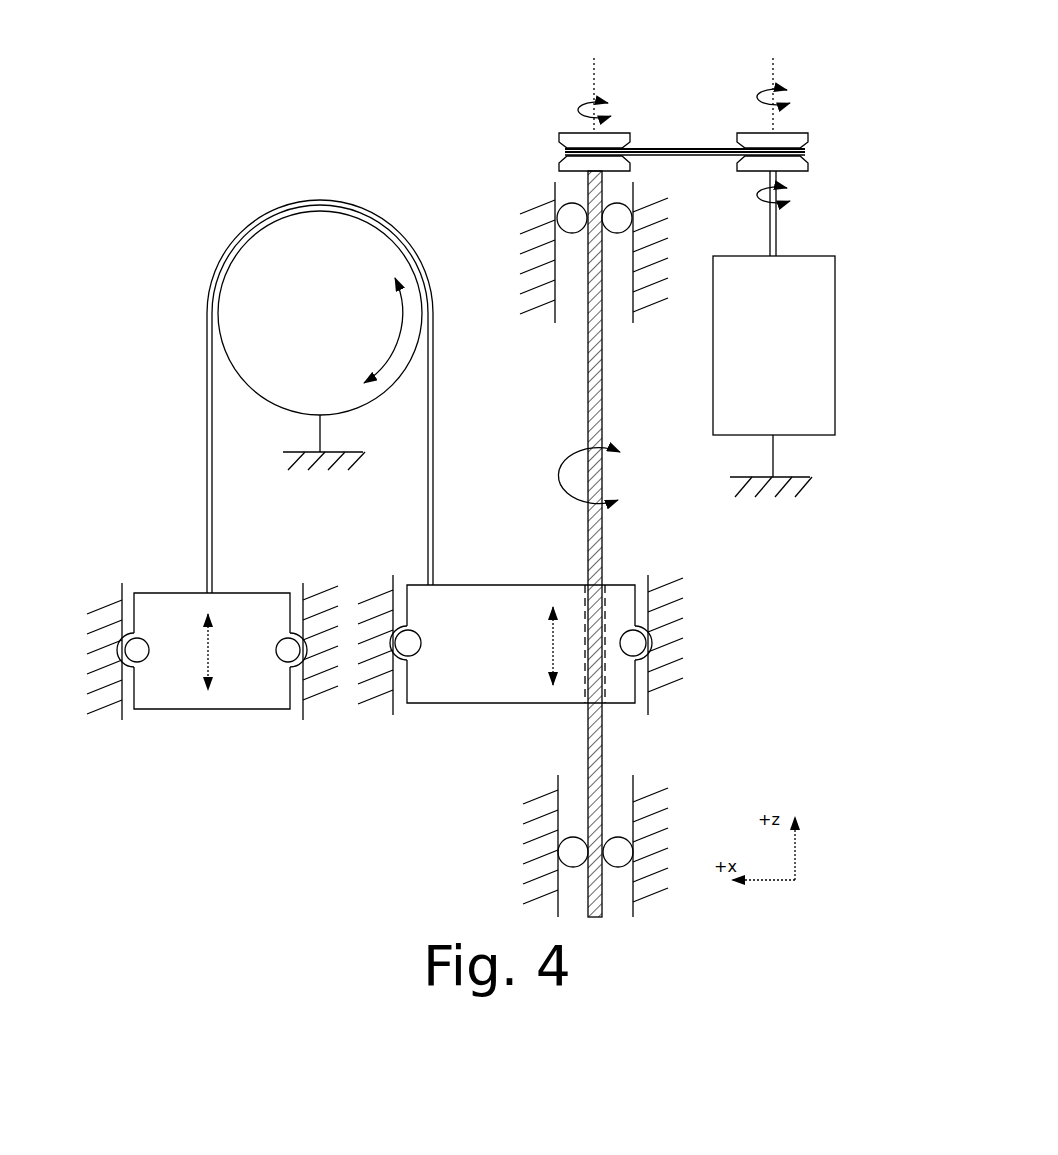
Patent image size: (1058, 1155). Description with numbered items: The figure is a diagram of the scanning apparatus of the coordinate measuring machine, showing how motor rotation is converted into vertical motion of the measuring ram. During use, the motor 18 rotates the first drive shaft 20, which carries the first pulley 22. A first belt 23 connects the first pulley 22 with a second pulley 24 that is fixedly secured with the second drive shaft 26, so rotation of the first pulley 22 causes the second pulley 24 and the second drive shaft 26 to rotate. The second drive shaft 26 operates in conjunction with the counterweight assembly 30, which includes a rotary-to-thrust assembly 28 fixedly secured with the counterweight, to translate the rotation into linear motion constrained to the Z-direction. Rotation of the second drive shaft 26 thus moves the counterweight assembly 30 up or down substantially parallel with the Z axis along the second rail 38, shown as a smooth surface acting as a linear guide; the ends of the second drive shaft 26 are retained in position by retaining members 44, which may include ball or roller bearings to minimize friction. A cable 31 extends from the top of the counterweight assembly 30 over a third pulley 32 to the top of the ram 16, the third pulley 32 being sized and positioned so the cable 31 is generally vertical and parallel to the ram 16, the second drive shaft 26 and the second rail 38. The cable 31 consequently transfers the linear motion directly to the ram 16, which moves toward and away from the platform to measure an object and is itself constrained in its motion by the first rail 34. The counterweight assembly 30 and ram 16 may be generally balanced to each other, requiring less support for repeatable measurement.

The ram 16 is at (160, 590).
The motor 18 is at (838, 343).
The first drive shaft 20 is at (781, 221).
The first pulley 22 is at (806, 128).
The first belt 23 is at (700, 142).
The second pulley 24 is at (552, 146).
The second drive shaft 26 is at (604, 381).
The rotary-to-thrust assembly 28 is at (607, 600).
The counterweight assembly 30 is at (472, 585).
The cable 31 is at (436, 436).
The third pulley 32 is at (307, 262).
The first rail 34 is at (322, 585).
The second rail 38 is at (380, 712).
The retaining members 44 is at (522, 235).